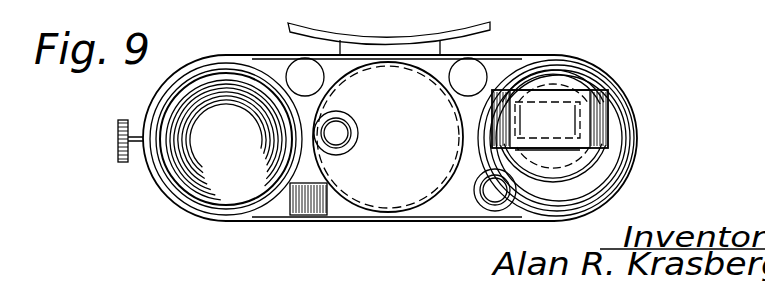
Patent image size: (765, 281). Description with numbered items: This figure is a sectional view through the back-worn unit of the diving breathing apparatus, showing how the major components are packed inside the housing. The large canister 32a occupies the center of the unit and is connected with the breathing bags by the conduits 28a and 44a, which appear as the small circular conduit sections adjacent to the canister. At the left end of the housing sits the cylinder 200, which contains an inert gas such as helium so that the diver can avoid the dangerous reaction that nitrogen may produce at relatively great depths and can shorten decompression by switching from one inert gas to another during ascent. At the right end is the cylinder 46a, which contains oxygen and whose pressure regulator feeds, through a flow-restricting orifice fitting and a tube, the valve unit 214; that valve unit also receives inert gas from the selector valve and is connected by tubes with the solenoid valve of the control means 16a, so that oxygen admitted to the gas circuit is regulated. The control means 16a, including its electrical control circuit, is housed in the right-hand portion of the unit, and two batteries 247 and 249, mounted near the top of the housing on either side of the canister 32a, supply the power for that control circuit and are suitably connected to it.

The cylinder 200 is at (177, 159).
The valve unit 214 is at (297, 200).
The battery 247 is at (302, 70).
The battery 249 is at (472, 72).
The canister 32a is at (365, 198).
The conduit 28a is at (342, 119).
The conduit 44a is at (497, 208).
The cylinder 46a is at (608, 180).
The control means 16a is at (693, 38).